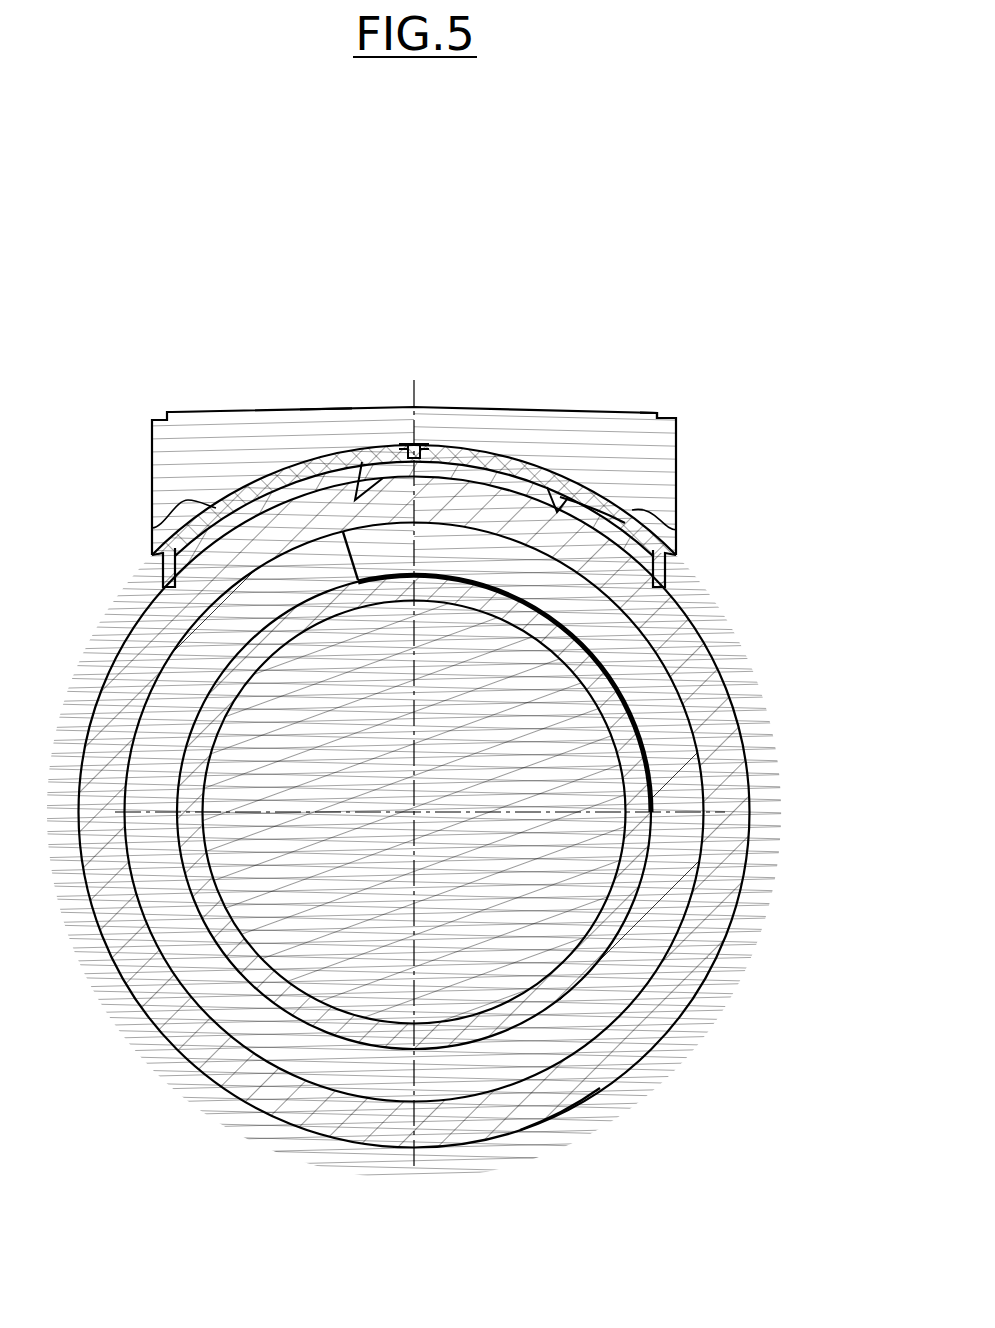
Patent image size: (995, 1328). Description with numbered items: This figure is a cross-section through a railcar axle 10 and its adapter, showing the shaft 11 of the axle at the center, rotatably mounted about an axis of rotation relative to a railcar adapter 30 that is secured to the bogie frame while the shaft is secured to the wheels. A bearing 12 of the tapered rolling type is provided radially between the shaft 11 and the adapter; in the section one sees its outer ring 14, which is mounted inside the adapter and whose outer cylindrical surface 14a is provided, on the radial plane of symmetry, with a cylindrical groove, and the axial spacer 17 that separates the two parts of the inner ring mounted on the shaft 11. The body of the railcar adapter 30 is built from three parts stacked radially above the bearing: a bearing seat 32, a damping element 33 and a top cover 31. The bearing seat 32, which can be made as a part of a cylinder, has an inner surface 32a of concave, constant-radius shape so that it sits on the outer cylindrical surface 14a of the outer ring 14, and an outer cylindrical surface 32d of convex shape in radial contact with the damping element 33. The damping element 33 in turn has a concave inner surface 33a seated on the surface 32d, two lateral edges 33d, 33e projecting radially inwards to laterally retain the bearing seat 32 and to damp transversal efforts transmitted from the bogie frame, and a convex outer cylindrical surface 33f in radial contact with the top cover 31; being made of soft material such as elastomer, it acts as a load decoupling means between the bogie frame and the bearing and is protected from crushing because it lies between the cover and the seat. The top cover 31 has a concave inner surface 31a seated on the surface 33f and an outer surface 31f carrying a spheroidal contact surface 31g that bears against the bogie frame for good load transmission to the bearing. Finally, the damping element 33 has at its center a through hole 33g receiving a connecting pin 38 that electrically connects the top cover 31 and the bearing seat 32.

The railcar axle 10 is at (251, 1147).
The shaft 11 is at (267, 884).
The bearing 12 is at (432, 1168).
The outer ring 14 is at (501, 1118).
The outer cylindrical surface 14a is at (570, 1113).
The axial spacer 17 is at (596, 943).
The railcar adapter 30 is at (704, 482).
The top cover 31 is at (535, 407).
The inner surface 31a is at (591, 504).
The outer surface 31f is at (667, 417).
The spheroidal contact surface 31g is at (327, 406).
The bearing seat 32 is at (275, 491).
The inner surface 32a is at (362, 462).
The outer cylindrical surface 32d is at (677, 530).
The damping element 33 is at (290, 469).
The inner surface 33a is at (560, 510).
The lateral edge 33d is at (667, 577).
The lateral edge 33e is at (165, 577).
The outer cylindrical surface 33f is at (152, 528).
The through hole 33g is at (414, 453).
The connecting pin 38 is at (424, 456).